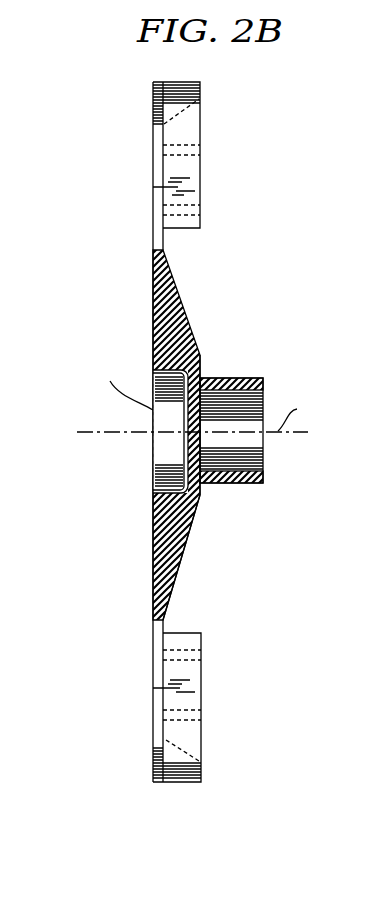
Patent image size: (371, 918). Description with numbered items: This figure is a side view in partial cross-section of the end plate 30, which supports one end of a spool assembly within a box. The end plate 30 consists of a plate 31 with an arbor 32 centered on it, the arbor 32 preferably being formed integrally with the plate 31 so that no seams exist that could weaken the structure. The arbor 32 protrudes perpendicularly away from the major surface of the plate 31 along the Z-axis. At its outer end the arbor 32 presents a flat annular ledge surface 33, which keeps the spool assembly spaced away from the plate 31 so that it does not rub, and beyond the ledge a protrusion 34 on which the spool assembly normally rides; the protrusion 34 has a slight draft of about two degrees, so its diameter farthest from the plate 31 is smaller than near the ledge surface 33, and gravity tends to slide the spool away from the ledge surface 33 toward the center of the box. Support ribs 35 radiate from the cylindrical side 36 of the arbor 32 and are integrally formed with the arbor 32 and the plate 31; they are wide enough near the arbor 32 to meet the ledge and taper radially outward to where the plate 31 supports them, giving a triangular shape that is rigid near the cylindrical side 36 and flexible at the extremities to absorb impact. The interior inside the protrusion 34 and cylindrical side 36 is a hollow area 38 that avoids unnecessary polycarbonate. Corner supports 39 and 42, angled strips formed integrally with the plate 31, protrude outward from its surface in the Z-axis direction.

The end plate 30 is at (205, 432).
The plate 31 is at (153, 632).
The arbor 32 is at (256, 396).
The flat annular ledge surface 33 is at (202, 497).
The protrusion 34 is at (263, 380).
The support ribs 35 is at (186, 435).
The cylindrical side 36 is at (195, 522).
The hollow area 38 is at (175, 441).
The corner support 39 is at (200, 166).
The corner support 42 is at (202, 738).